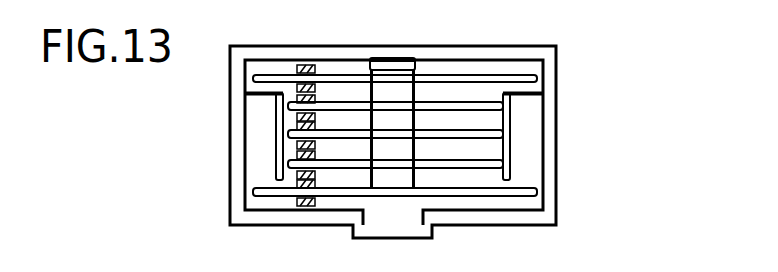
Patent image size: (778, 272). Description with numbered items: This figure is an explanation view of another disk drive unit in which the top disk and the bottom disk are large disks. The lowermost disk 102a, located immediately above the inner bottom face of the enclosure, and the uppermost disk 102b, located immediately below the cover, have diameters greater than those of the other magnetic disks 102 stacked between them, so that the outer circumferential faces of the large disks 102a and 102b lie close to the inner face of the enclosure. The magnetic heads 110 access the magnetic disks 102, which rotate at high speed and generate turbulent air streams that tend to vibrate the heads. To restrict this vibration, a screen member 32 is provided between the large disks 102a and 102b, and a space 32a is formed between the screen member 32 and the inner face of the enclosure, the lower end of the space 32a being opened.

The magnetic heads 110 is at (307, 66).
The screen member 32 is at (267, 95).
The space 32a is at (270, 143).
The magnetic disks 102 is at (505, 165).
The lowermost disk 102a is at (537, 191).
The uppermost disk 102b is at (538, 76).